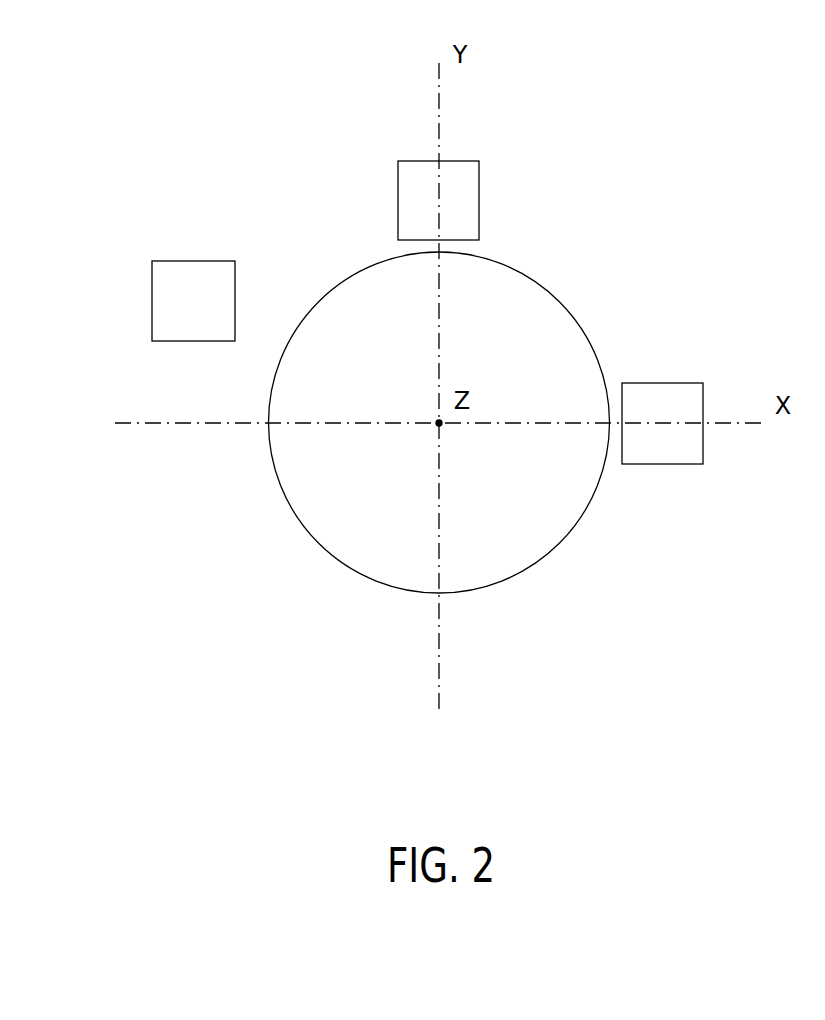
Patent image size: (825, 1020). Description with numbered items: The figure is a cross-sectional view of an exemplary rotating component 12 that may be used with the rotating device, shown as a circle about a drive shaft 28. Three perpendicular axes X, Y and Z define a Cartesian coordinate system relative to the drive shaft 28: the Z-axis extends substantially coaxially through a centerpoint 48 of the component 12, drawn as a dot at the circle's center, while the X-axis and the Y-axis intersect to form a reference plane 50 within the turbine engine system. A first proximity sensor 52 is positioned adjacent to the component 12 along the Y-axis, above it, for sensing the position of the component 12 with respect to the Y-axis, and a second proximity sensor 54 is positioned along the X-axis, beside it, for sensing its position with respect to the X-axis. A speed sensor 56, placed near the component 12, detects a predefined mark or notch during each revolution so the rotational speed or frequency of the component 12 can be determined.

The rotating component 12 is at (620, 98).
The drive shaft 28 is at (548, 290).
The centerpoint 48 is at (441, 426).
The reference plane 50 is at (622, 206).
The first proximity sensor 52 is at (480, 188).
The second proximity sensor 54 is at (646, 383).
The speed sensor 56 is at (184, 261).